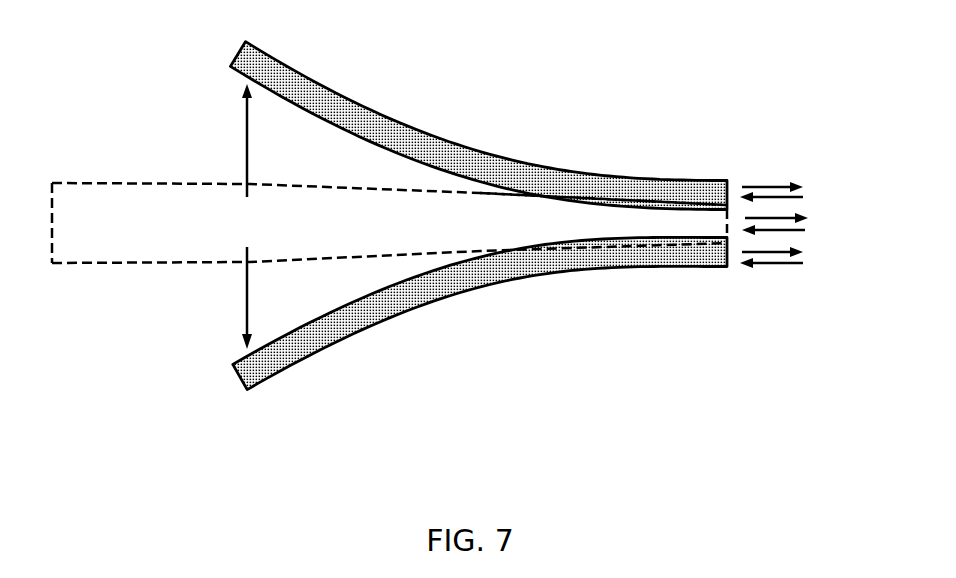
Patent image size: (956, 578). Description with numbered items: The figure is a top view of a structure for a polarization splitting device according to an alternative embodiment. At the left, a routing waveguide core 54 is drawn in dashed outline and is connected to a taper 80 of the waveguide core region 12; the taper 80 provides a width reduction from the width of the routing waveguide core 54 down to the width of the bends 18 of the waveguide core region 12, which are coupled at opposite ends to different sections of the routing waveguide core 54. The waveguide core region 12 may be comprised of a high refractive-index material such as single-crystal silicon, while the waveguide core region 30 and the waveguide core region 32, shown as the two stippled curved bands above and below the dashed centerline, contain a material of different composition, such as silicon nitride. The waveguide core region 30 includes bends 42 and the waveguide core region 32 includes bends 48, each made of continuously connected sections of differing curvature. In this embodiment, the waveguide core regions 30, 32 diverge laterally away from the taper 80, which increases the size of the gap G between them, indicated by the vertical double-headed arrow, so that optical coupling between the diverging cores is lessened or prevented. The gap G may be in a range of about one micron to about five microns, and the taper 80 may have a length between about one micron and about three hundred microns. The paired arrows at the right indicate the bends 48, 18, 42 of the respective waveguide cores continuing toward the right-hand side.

The waveguide core region 12 is at (138, 180).
The waveguide core region 30 is at (430, 148).
The waveguide core region 32 is at (423, 295).
The routing waveguide core 54 is at (95, 207).
The taper 80 is at (295, 210).
The gap G is at (246, 216).
The bends 48 is at (793, 190).
The bends 18 is at (797, 226).
The bends 42 is at (793, 258).